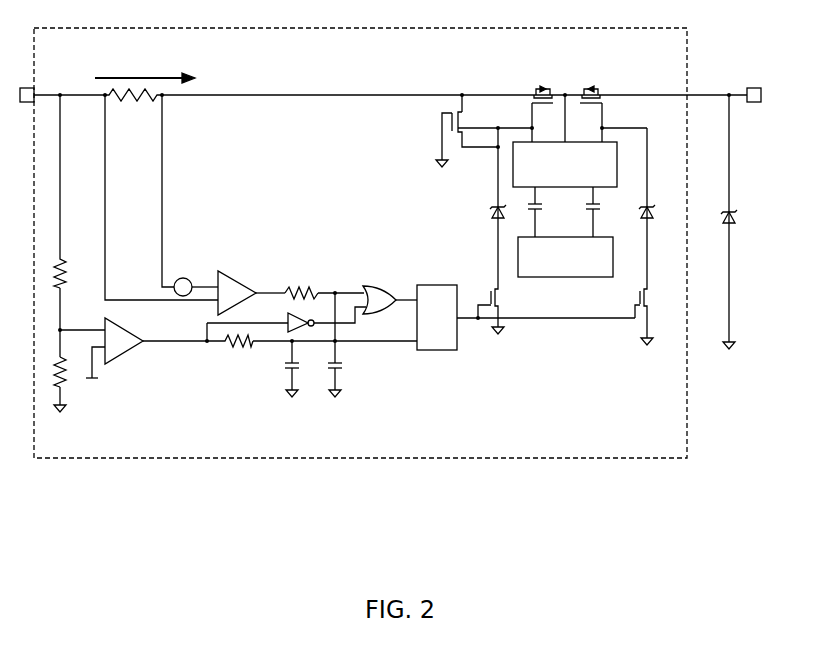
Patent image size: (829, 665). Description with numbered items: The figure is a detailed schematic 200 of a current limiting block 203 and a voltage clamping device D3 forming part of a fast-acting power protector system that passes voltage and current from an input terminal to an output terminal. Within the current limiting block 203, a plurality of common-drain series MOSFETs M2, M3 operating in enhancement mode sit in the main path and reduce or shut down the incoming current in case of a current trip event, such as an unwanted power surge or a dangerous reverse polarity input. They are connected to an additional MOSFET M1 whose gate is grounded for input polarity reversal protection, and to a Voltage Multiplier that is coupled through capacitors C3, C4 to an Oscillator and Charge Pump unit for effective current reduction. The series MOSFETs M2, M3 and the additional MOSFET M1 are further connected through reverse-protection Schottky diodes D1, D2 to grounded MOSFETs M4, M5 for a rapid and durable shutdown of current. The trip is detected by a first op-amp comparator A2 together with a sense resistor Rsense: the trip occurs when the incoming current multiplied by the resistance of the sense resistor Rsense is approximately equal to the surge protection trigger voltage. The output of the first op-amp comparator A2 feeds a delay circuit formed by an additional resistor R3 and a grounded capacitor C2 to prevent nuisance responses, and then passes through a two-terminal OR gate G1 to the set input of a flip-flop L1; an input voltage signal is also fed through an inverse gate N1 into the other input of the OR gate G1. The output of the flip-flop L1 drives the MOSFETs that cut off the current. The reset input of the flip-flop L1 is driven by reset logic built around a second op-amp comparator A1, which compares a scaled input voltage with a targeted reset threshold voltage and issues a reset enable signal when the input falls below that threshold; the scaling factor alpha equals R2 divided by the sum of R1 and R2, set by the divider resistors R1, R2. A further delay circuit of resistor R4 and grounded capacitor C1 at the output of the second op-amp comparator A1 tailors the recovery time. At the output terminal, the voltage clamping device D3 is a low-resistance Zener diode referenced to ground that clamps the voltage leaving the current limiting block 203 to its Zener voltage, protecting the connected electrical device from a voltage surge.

The detailed schematic 200 is at (413, 563).
The current limiting block 203 is at (360, 229).
The sense resistor Rsense is at (132, 102).
The resistor R1 is at (52, 272).
The resistor R2 is at (52, 372).
The additional resistor R3 is at (301, 283).
The additional resistor R4 is at (237, 351).
The second op-amp comparator A1 is at (124, 339).
The first op-amp comparator A2 is at (237, 291).
The inverse gate N1 is at (301, 318).
The two-terminal OR gate G1 is at (379, 292).
The flip-flop L1 is at (437, 304).
The capacitor C1 is at (279, 365).
The capacitor C2 is at (344, 341).
The capacitor C3 is at (544, 212).
The capacitor C4 is at (602, 212).
The additional MOSFET M1 is at (487, 127).
The common-drain series MOSFET M2 is at (542, 105).
The common-drain series MOSFET M3 is at (590, 105).
The grounded MOSFET M4 is at (511, 307).
The grounded MOSFET M5 is at (658, 312).
The reverse-protection Schottky diode D1 is at (488, 207).
The reverse-protection Schottky diode D2 is at (657, 207).
The voltage clamping device D3 is at (740, 218).